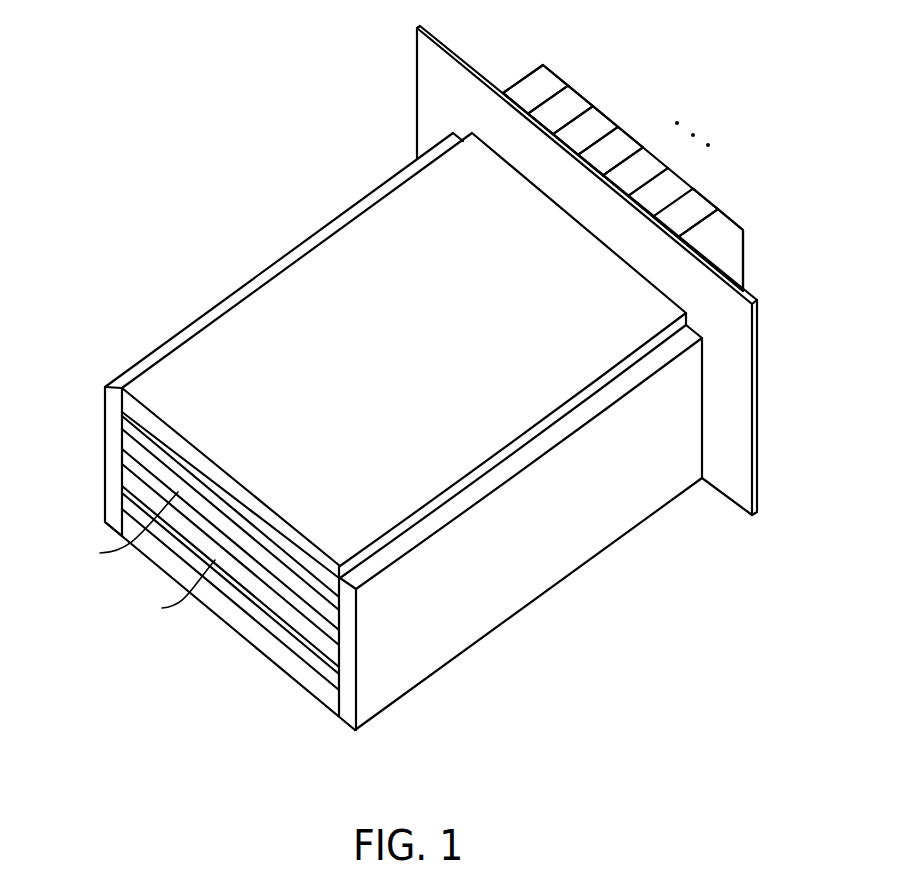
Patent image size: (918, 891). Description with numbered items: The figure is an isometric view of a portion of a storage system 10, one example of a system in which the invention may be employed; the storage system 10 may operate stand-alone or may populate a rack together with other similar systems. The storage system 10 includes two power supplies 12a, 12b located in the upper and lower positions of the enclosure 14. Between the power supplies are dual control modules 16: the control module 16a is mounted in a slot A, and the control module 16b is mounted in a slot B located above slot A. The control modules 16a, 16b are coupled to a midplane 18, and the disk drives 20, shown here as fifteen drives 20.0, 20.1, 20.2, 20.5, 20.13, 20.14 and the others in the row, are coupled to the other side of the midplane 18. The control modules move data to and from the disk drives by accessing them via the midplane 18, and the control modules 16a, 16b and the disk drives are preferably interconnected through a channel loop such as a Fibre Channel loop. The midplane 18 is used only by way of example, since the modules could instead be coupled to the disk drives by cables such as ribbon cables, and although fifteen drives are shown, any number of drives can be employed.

The storage system 10 is at (217, 190).
The power supply 12a is at (220, 622).
The power supply 12b is at (138, 372).
The enclosure 14 is at (607, 523).
The dual control modules 16 is at (150, 482).
The control module 16a is at (152, 487).
The control module 16b is at (133, 440).
The midplane 18 is at (723, 462).
The disk drives 20 is at (645, 152).
The disk drive 20.0 is at (553, 72).
The disk drive 20.1 is at (580, 92).
The disk drive 20.2 is at (605, 113).
The disk drive 20.5 is at (632, 132).
The disk drive 20.13 is at (707, 199).
The disk drive 20.14 is at (733, 222).